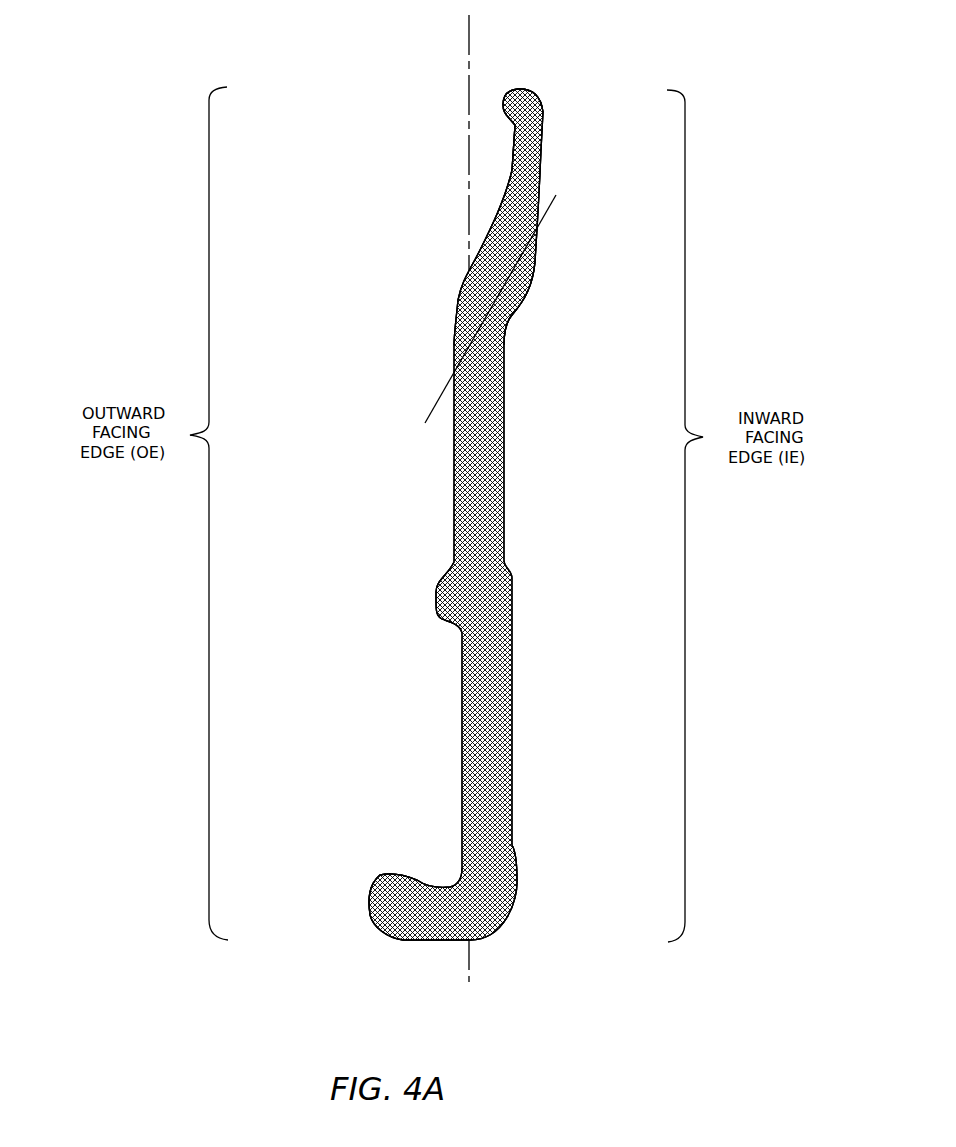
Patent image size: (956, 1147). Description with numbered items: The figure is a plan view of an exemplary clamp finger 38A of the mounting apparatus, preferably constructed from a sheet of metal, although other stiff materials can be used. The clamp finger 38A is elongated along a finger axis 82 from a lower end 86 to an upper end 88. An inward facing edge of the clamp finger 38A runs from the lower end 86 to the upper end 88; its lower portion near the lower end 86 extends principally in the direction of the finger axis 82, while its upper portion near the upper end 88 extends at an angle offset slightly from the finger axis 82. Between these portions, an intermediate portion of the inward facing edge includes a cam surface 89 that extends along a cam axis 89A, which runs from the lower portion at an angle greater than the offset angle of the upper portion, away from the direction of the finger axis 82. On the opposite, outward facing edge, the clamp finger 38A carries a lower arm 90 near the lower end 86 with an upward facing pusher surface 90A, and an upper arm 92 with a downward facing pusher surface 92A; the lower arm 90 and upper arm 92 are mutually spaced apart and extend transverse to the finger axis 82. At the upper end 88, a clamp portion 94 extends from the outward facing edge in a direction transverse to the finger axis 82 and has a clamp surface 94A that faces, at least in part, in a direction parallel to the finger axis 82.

The clamp finger 38A is at (100, 71).
The finger axis 82 is at (470, 42).
The lower end 86 is at (528, 933).
The upper end 88 is at (393, 134).
The cam surface 89 is at (522, 300).
The cam axis 89A is at (551, 198).
The lower arm 90 is at (395, 940).
The upward facing pusher surface 90A is at (390, 872).
The upper arm 92 is at (450, 575).
The downward facing pusher surface 92A is at (450, 622).
The clamp portion 94 is at (519, 98).
The clamp surface 94A is at (511, 118).